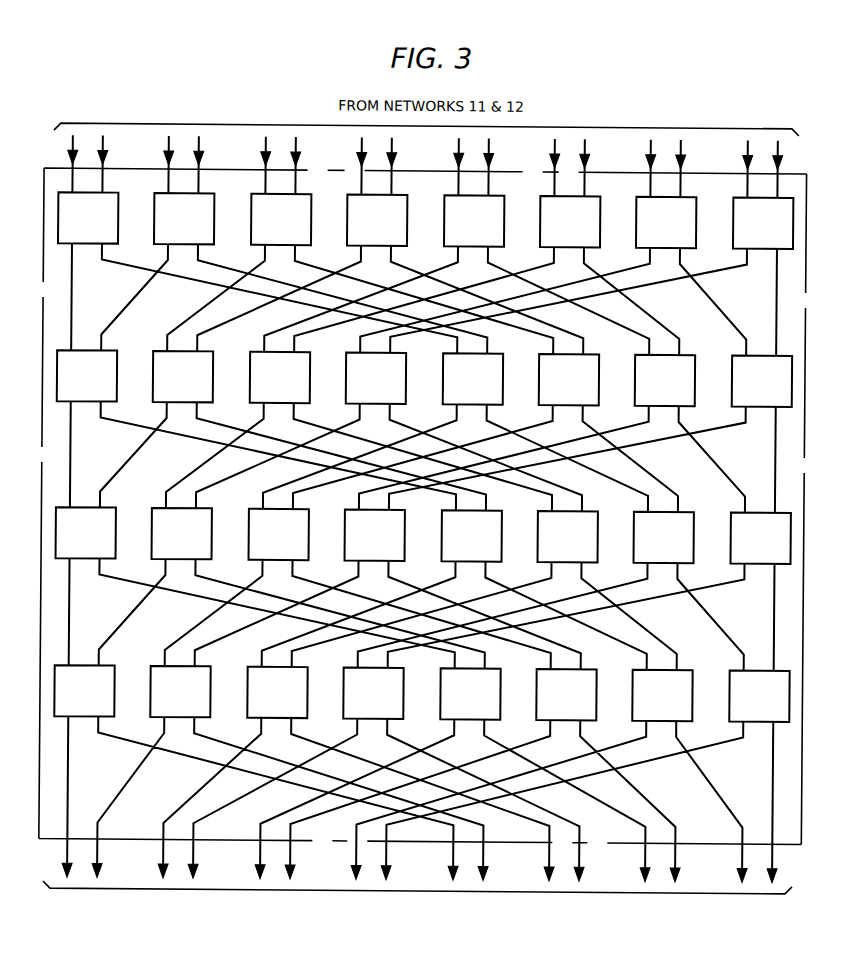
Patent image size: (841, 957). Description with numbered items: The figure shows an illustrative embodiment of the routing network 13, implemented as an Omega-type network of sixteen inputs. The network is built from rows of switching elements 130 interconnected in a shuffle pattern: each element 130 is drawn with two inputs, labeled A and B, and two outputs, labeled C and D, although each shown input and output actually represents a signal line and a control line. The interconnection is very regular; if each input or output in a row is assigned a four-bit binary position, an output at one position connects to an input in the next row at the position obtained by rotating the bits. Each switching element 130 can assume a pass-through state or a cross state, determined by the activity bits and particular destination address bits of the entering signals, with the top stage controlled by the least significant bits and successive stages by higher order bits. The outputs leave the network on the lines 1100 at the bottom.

The routing network 13 is at (62, 166).
The switching element 130 is at (211, 193).
The output lines 1100 is at (420, 819).